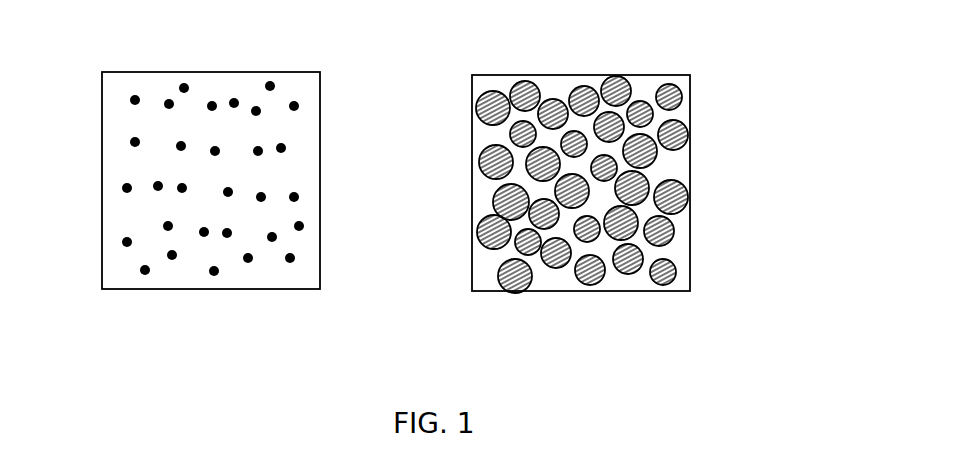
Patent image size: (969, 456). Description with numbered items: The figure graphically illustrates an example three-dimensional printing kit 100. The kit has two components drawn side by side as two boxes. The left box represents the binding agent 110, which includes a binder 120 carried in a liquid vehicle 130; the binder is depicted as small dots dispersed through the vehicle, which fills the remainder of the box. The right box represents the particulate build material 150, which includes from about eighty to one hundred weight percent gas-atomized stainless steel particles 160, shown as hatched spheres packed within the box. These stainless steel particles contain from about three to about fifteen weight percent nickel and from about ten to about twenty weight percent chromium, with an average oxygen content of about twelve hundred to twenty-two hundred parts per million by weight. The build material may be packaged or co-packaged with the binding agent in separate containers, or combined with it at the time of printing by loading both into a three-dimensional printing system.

The three-dimensional printing kit 100 is at (163, 42).
The binding agent 110 is at (318, 318).
The binder 120 is at (298, 197).
The liquid vehicle 130 is at (305, 133).
The particulate build material 150 is at (689, 318).
The gas-atomized stainless steel particles 160 is at (677, 135).